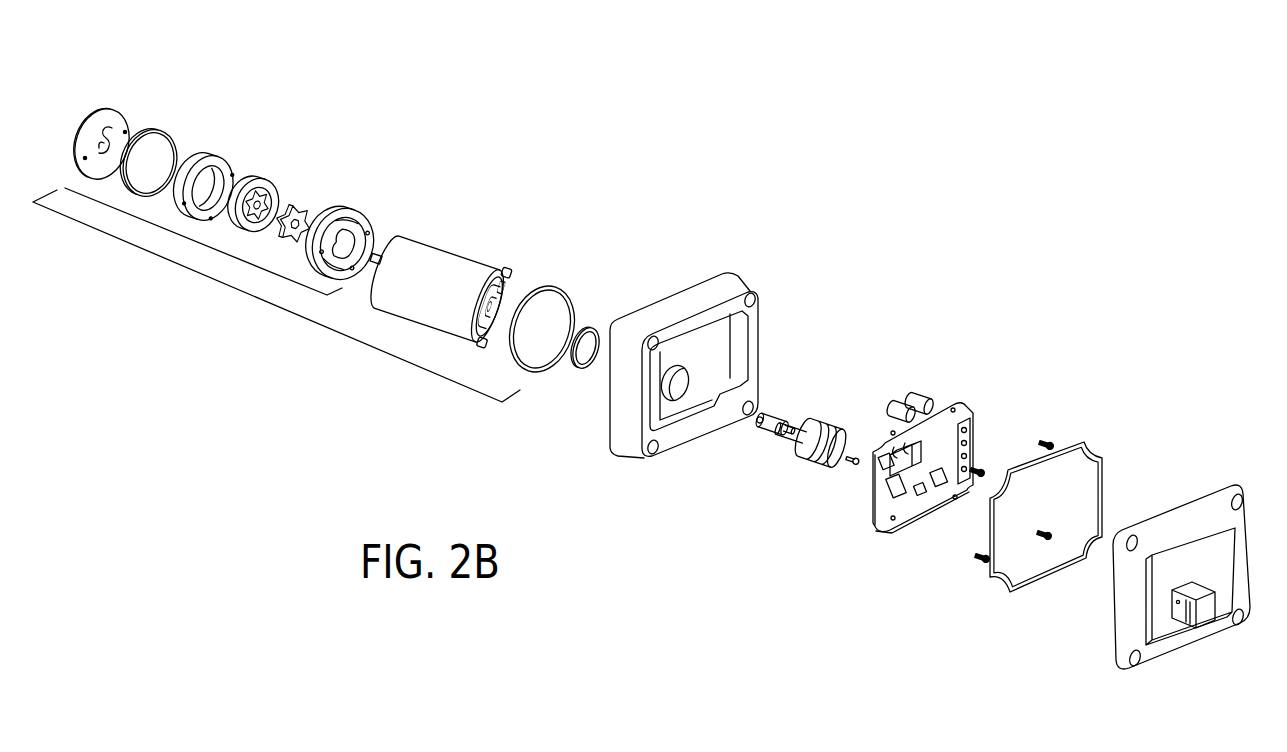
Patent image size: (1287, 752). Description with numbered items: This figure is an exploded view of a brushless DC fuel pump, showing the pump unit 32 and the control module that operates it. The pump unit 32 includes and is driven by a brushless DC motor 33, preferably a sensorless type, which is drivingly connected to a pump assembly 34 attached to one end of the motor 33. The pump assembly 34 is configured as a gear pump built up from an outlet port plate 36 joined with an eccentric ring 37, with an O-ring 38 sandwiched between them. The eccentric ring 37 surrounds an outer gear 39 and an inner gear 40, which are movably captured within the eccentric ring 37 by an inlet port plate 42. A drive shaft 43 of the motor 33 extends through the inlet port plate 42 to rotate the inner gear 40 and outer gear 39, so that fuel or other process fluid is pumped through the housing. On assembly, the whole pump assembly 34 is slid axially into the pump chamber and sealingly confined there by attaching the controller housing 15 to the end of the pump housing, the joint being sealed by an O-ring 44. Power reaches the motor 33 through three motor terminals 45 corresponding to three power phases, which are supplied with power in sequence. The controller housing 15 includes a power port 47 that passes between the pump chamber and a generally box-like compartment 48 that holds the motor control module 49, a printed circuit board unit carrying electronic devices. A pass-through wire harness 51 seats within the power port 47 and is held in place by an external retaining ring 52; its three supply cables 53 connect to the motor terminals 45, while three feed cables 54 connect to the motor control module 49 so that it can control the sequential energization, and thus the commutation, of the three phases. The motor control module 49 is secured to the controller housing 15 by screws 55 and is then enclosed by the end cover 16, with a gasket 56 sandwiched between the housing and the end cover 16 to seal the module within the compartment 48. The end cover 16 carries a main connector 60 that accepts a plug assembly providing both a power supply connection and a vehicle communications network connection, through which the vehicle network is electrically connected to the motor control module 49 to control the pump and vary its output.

The controller housing 15 is at (705, 364).
The end cover 16 is at (1196, 560).
The pump unit 32 is at (265, 303).
The brushless DC motor 33 is at (471, 254).
The pump assembly 34 is at (183, 239).
The outlet port plate 36 is at (123, 110).
The eccentric ring 37 is at (229, 152).
The O-ring 38 is at (176, 131).
The outer gear 39 is at (271, 178).
The inner gear 40 is at (311, 208).
The inlet port plate 42 is at (363, 212).
The drive shaft 43 is at (381, 252).
The O-ring 44 is at (561, 283).
The motor terminals 45 is at (494, 278).
The power port 47 is at (683, 397).
The compartment 48 is at (684, 332).
The motor control module 49 is at (967, 400).
The pass-through wire harness 51 is at (847, 426).
The external retaining ring 52 is at (599, 330).
The supply cables 53 is at (776, 418).
The feed cables 54 is at (855, 472).
The screws 55 is at (720, 320).
The gasket 56 is at (1100, 451).
The main connector 60 is at (1201, 629).